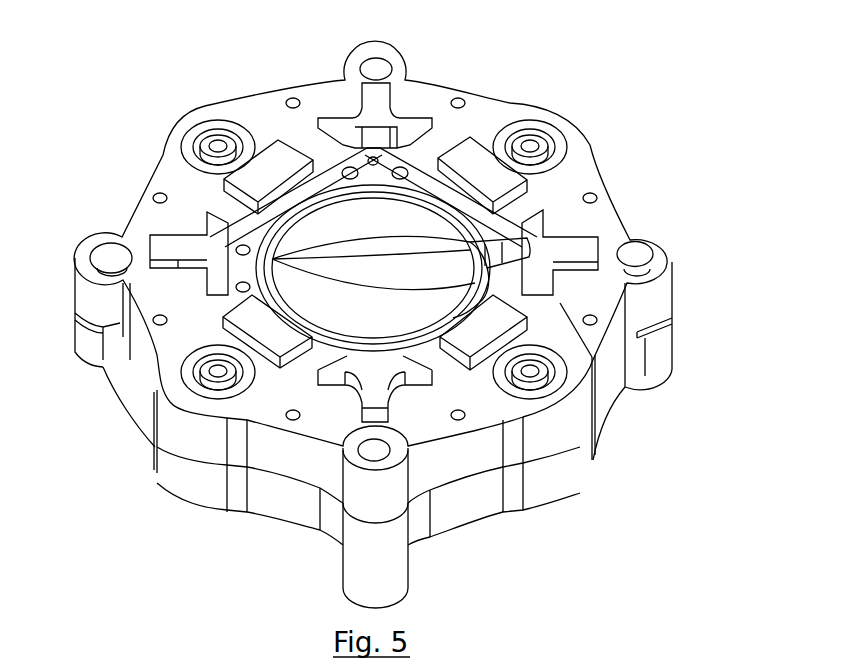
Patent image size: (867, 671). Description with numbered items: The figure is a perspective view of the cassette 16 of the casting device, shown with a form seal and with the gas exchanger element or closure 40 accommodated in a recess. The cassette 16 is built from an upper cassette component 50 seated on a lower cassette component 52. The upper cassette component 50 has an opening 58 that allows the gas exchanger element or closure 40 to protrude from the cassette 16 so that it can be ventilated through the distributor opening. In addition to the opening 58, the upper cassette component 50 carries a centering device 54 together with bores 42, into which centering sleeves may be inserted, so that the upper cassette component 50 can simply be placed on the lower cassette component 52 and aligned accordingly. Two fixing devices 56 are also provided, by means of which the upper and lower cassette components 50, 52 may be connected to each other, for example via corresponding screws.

The cassette 16 is at (617, 76).
The closure 40 is at (290, 241).
The bores 42 is at (571, 145).
The upper cassette component 50 is at (575, 441).
The lower cassette component 52 is at (490, 518).
The centering device 54 is at (346, 460).
The fixing devices 56 is at (675, 261).
The opening 58 is at (221, 292).